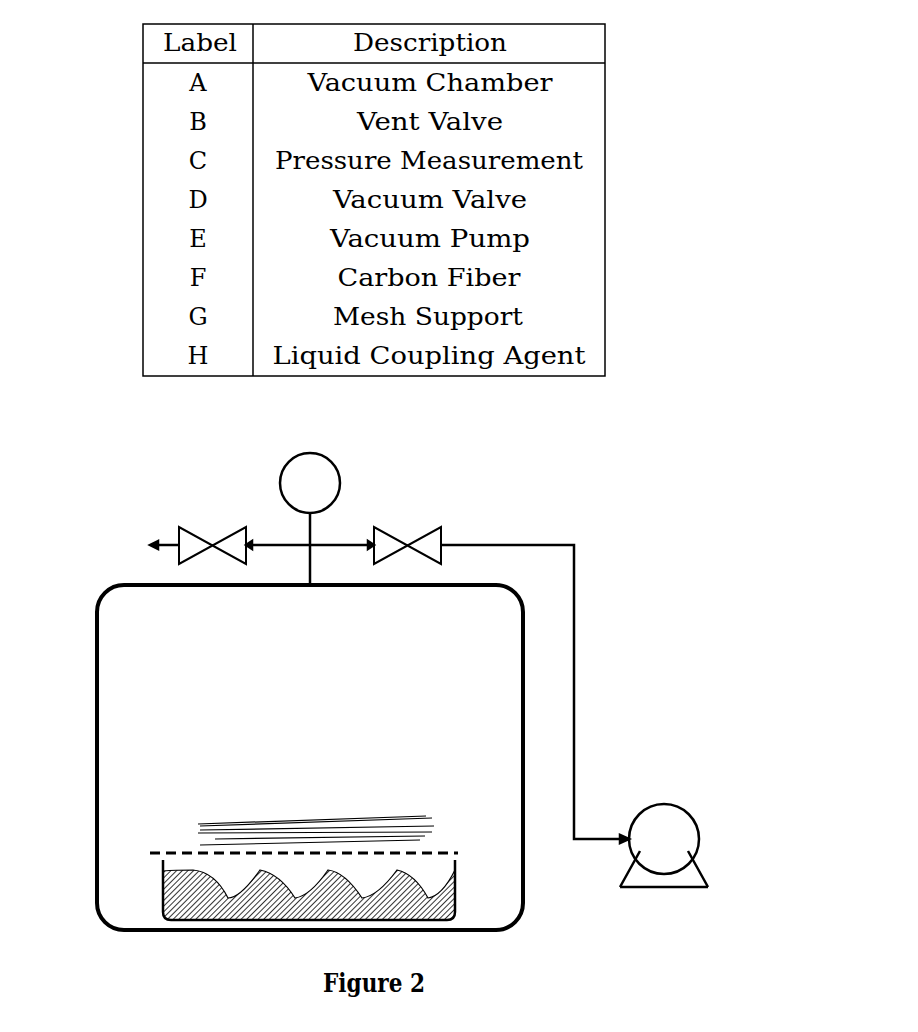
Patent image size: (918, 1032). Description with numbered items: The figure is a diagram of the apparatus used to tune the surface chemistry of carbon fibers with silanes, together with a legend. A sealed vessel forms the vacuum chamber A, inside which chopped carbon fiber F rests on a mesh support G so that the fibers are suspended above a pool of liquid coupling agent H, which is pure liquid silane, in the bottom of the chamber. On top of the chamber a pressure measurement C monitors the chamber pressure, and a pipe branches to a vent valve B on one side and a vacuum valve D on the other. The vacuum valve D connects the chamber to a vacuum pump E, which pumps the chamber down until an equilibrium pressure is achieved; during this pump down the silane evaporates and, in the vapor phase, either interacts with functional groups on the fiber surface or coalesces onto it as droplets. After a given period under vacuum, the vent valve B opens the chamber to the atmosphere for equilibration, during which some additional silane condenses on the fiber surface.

The vacuum chamber A is at (86, 655).
The vent valve B is at (212, 529).
The pressure measurement C is at (342, 459).
The vacuum valve D is at (407, 529).
The vacuum pump E is at (691, 812).
The carbon fiber F is at (188, 829).
The mesh support G is at (463, 849).
The liquid coupling agent H is at (461, 896).